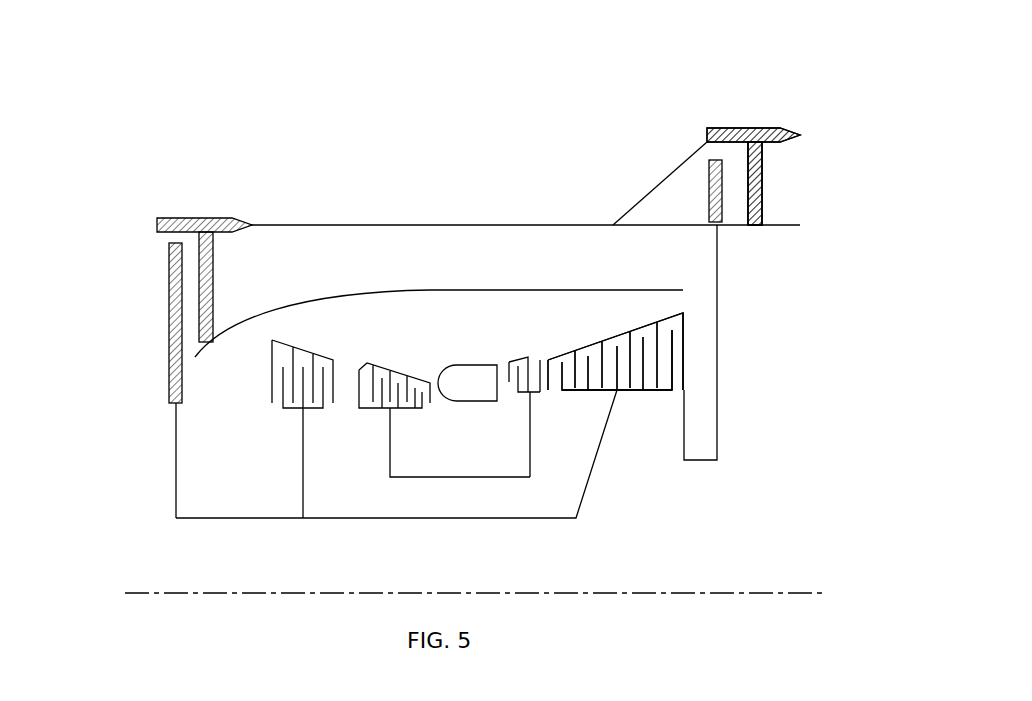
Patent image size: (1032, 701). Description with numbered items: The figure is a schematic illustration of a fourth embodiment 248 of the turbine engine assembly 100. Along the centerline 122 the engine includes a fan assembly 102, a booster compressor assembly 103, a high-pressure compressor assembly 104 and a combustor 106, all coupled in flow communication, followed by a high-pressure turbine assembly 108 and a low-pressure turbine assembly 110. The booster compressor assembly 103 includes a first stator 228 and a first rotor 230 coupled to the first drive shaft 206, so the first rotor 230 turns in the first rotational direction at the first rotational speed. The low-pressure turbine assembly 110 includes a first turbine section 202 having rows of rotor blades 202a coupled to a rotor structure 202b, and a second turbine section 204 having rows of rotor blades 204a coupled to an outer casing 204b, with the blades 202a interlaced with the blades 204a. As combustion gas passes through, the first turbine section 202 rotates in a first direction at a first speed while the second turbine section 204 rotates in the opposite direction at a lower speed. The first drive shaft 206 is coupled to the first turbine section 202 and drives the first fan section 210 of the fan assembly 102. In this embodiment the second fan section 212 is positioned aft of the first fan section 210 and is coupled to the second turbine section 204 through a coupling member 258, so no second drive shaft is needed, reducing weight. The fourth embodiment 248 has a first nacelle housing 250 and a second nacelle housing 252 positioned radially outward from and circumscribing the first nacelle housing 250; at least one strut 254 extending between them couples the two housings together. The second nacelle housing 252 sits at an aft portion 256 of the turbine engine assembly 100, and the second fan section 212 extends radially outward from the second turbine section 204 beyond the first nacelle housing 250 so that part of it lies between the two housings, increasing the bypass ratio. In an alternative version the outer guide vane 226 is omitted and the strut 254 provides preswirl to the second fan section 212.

The turbine engine assembly 100 is at (166, 152).
The fan assembly 102 is at (131, 298).
The booster compressor assembly 103 is at (300, 339).
The high-pressure compressor assembly 104 is at (395, 364).
The combustor 106 is at (472, 365).
The high-pressure turbine assembly 108 is at (517, 354).
The low-pressure turbine assembly 110 is at (600, 318).
The centerline 122 is at (664, 591).
The first turbine section 202 is at (631, 392).
The rotor blades 202a is at (676, 370).
The rotor structure 202b is at (666, 392).
The second turbine section 204 is at (676, 310).
The rotor blades 204a is at (681, 340).
The outer casing 204b is at (687, 303).
The first drive shaft 206 is at (409, 520).
The first fan section 210 is at (169, 360).
The second fan section 212 is at (723, 200).
The outer guide vane 226 is at (765, 160).
The first stator 228 is at (320, 356).
The first rotor 230 is at (312, 410).
The fourth embodiment 248 is at (641, 72).
The first nacelle housing 250 is at (406, 224).
The second nacelle housing 252 is at (752, 128).
The strut 254 is at (665, 165).
The aft portion 256 is at (801, 190).
The coupling member 258 is at (718, 410).